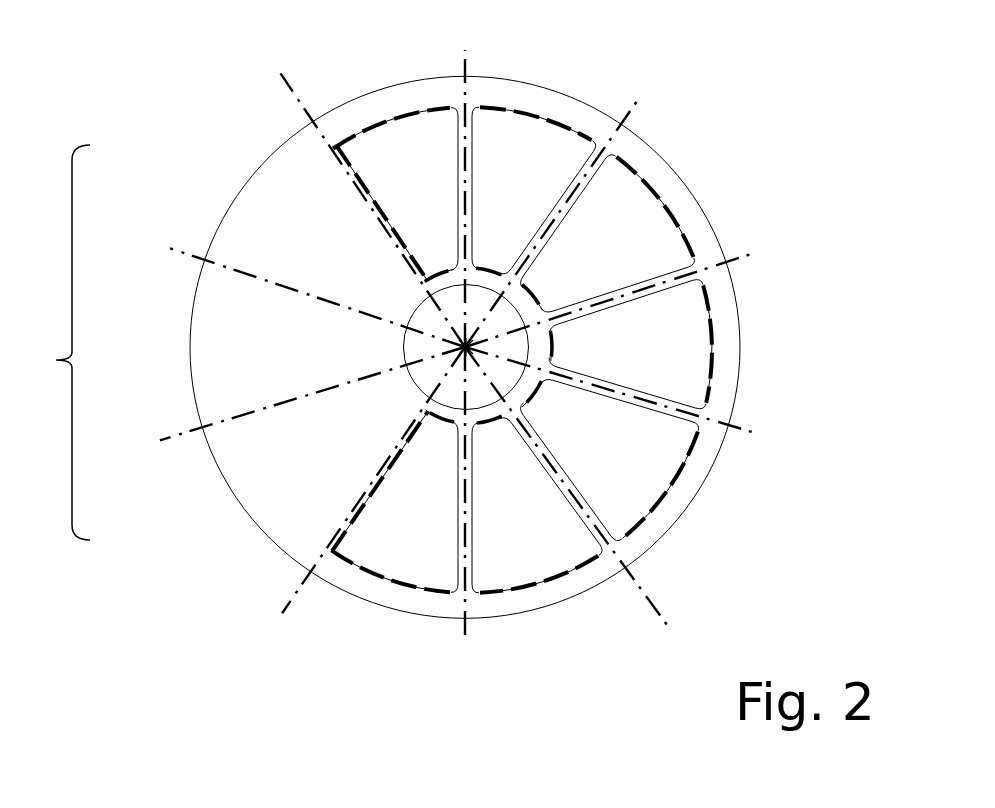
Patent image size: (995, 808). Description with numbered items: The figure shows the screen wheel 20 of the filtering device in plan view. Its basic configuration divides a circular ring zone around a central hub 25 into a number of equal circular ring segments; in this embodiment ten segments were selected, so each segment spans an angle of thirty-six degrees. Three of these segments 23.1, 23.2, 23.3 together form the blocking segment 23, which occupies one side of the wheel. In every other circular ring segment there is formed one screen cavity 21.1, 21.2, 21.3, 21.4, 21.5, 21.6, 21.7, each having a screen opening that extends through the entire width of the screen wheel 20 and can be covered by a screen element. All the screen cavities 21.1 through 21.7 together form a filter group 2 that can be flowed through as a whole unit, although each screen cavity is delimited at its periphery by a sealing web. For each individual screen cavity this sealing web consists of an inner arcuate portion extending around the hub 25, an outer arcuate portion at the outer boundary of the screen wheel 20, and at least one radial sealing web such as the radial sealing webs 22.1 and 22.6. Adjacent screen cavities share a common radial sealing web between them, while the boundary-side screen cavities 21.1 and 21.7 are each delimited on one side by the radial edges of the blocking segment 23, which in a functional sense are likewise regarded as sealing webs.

The screen wheel 20 is at (183, 72).
The filter group 2 is at (638, 172).
The screen cavity 21.1 is at (433, 190).
The screen cavity 21.2 is at (533, 193).
The screen cavity 21.3 is at (630, 240).
The screen cavity 21.4 is at (660, 335).
The screen cavity 21.5 is at (640, 450).
The screen cavity 21.6 is at (542, 530).
The screen cavity 21.7 is at (422, 522).
The radial sealing web 22.1 is at (473, 113).
The radial sealing web 22.6 is at (467, 560).
The blocking segment 23 is at (55, 342).
The segment 23.1 is at (300, 466).
The segment 23.2 is at (323, 348).
The segment 23.3 is at (317, 203).
The hub 25 is at (470, 347).